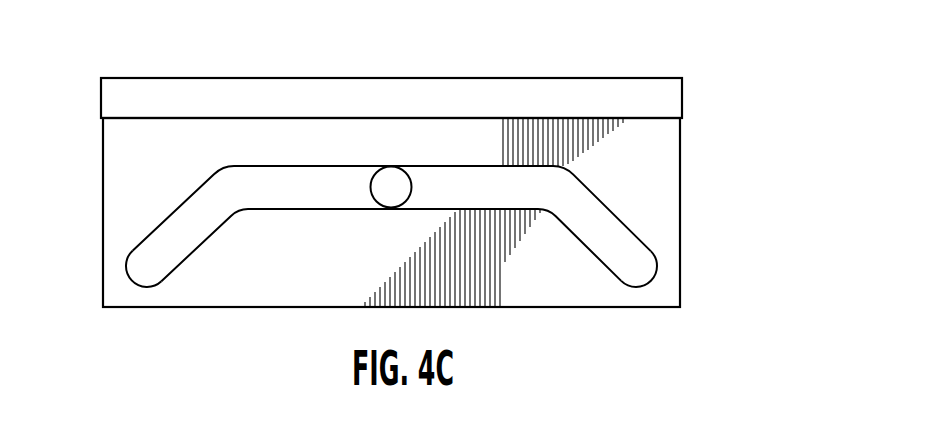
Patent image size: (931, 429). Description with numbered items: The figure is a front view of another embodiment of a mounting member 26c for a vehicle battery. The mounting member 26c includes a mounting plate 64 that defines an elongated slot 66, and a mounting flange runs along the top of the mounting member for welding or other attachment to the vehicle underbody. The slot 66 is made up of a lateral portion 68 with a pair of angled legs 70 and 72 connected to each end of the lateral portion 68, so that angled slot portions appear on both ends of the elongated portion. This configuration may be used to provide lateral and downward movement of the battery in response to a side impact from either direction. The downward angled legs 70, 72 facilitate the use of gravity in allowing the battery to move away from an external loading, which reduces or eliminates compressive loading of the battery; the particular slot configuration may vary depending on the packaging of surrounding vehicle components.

The mounting member 26c is at (686, 203).
The mounting plate 64 is at (107, 146).
The elongated slot 66 is at (565, 163).
The lateral portion 68 is at (473, 166).
The angled leg 70 is at (139, 267).
The angled leg 72 is at (636, 275).